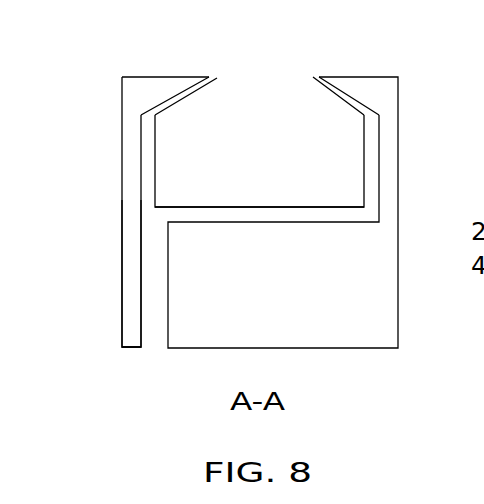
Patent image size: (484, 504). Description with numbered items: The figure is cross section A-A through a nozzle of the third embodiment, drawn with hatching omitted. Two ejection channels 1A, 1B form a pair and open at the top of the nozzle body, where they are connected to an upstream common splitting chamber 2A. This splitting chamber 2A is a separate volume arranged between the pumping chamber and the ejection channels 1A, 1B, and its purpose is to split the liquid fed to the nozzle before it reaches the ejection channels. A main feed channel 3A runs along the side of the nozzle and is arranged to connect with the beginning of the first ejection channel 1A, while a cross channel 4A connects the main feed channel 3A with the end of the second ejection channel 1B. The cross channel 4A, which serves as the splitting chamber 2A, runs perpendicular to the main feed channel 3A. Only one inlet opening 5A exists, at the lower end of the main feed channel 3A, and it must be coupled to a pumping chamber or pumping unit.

The ejection channel 1A is at (198, 79).
The ejection channel 1B is at (308, 76).
The splitting chamber 2A is at (182, 213).
The cross channel 4A is at (190, 243).
The main feed channel 3A is at (146, 296).
The inlet opening 5A is at (145, 333).